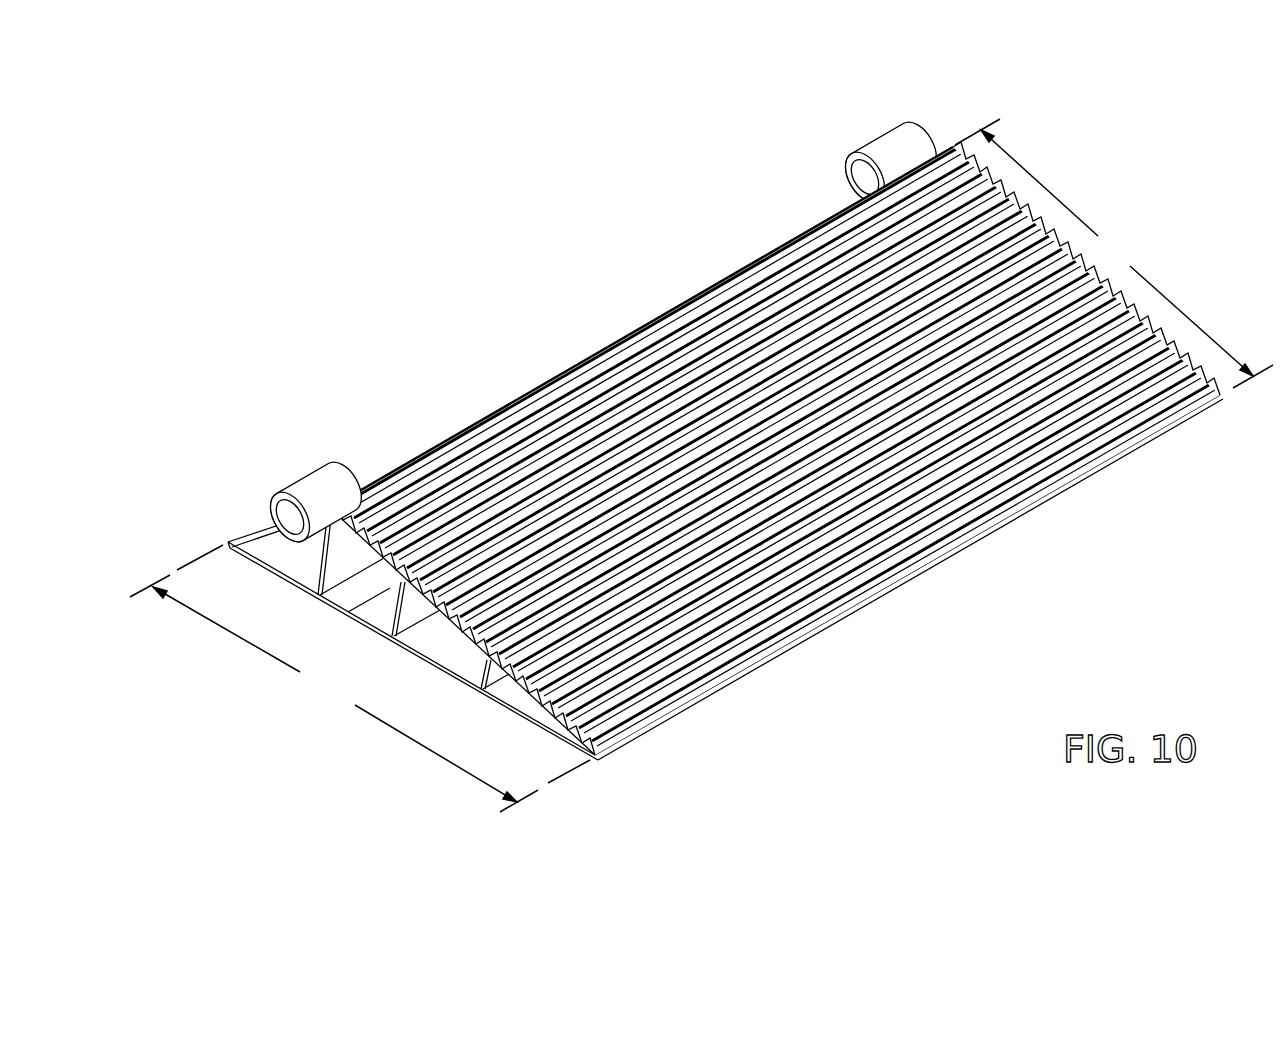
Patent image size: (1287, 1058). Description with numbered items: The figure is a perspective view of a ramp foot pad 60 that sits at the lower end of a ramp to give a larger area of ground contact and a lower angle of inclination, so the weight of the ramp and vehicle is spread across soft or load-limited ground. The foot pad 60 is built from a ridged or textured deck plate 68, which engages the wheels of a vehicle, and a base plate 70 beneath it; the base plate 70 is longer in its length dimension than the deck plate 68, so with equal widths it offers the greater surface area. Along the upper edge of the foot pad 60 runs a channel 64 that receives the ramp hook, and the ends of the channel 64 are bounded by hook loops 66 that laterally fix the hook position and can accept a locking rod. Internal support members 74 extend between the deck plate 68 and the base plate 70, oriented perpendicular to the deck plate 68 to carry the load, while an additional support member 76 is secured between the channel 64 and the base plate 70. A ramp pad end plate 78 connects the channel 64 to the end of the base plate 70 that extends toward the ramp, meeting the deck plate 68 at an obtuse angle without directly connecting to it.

The foot pad 60 is at (939, 112).
The channel 64 is at (775, 448).
The hook loops 66 is at (888, 150).
The deck plate 68 is at (822, 555).
The base plate 70 is at (352, 621).
The internal support members 74 is at (486, 678).
The additional support member 76 is at (312, 560).
The ramp pad end plate 78 is at (256, 522).